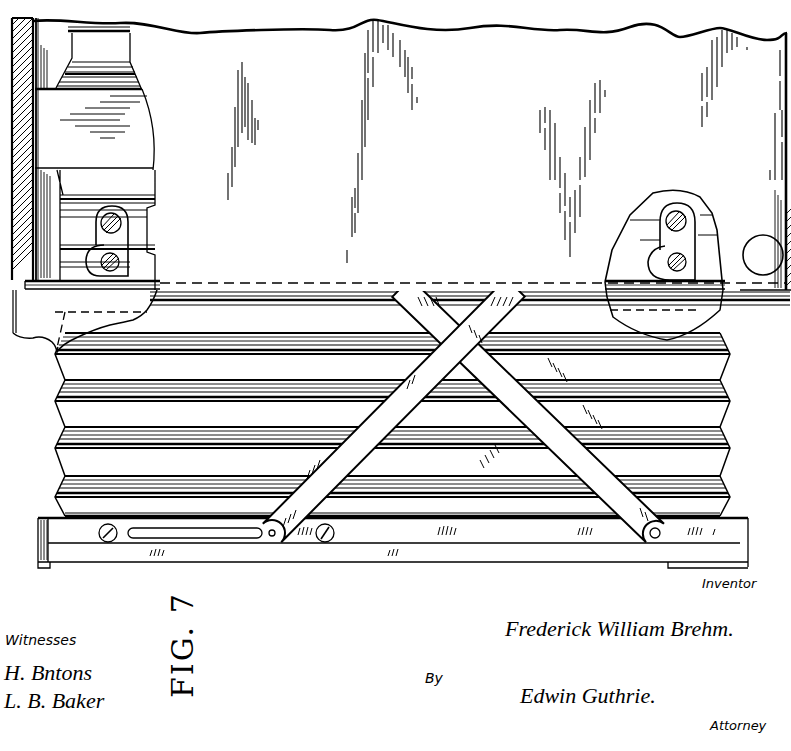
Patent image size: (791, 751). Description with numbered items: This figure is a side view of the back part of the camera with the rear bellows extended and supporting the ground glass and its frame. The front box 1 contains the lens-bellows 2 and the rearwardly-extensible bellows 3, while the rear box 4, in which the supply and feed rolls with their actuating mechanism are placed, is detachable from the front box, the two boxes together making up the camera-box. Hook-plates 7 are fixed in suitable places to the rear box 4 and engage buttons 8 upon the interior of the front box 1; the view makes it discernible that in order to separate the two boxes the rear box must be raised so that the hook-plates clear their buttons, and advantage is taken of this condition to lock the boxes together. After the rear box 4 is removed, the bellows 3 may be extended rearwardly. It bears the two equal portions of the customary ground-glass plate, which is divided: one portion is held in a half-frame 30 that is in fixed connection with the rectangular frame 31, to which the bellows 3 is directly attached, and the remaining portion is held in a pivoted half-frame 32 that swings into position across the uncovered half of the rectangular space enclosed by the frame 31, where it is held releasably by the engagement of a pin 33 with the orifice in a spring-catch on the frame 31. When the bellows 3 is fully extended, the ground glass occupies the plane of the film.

The front box 1 is at (24, 18).
The lens-bellows 2 is at (92, 40).
The rearwardly-extensible bellows 3 is at (62, 433).
The rear box 4 is at (20, 337).
The hook-plates 7 is at (93, 283).
The buttons 8 is at (105, 252).
The half-frame 30 is at (448, 560).
The rectangular frame 31 is at (38, 518).
The pivoted half-frame 32 is at (288, 525).
The pin 33 is at (132, 538).